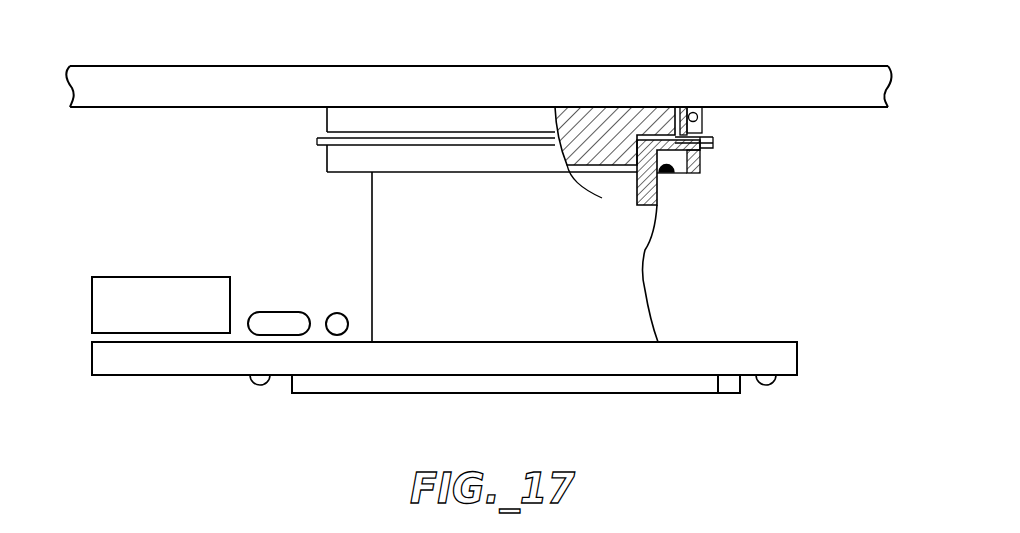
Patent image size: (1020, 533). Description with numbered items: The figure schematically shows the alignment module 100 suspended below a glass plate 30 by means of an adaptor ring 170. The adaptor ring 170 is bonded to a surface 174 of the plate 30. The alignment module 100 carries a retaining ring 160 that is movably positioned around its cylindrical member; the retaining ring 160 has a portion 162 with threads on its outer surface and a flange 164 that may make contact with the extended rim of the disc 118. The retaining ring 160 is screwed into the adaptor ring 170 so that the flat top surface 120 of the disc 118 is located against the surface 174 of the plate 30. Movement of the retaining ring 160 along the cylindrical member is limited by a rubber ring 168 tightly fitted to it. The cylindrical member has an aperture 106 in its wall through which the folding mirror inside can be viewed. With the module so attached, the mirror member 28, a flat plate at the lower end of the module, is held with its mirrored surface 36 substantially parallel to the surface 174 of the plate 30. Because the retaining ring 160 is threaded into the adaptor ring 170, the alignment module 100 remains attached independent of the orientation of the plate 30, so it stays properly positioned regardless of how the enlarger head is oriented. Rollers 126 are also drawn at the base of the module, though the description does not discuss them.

The plate 30 is at (768, 67).
The surface of plate 174 is at (843, 108).
The adaptor ring 170 is at (372, 117).
The retaining ring 160 is at (345, 165).
The threaded portion 162 is at (340, 136).
The flat surface 120 is at (583, 107).
The disc 118 is at (667, 107).
The rubber ring 168 is at (677, 178).
The flange 164 is at (700, 165).
The aperture 106 is at (645, 278).
The alignment module 100 is at (244, 222).
The mirror member 28 is at (673, 386).
The mirrored surface 36 is at (718, 393).
The rollers 126 is at (258, 386).